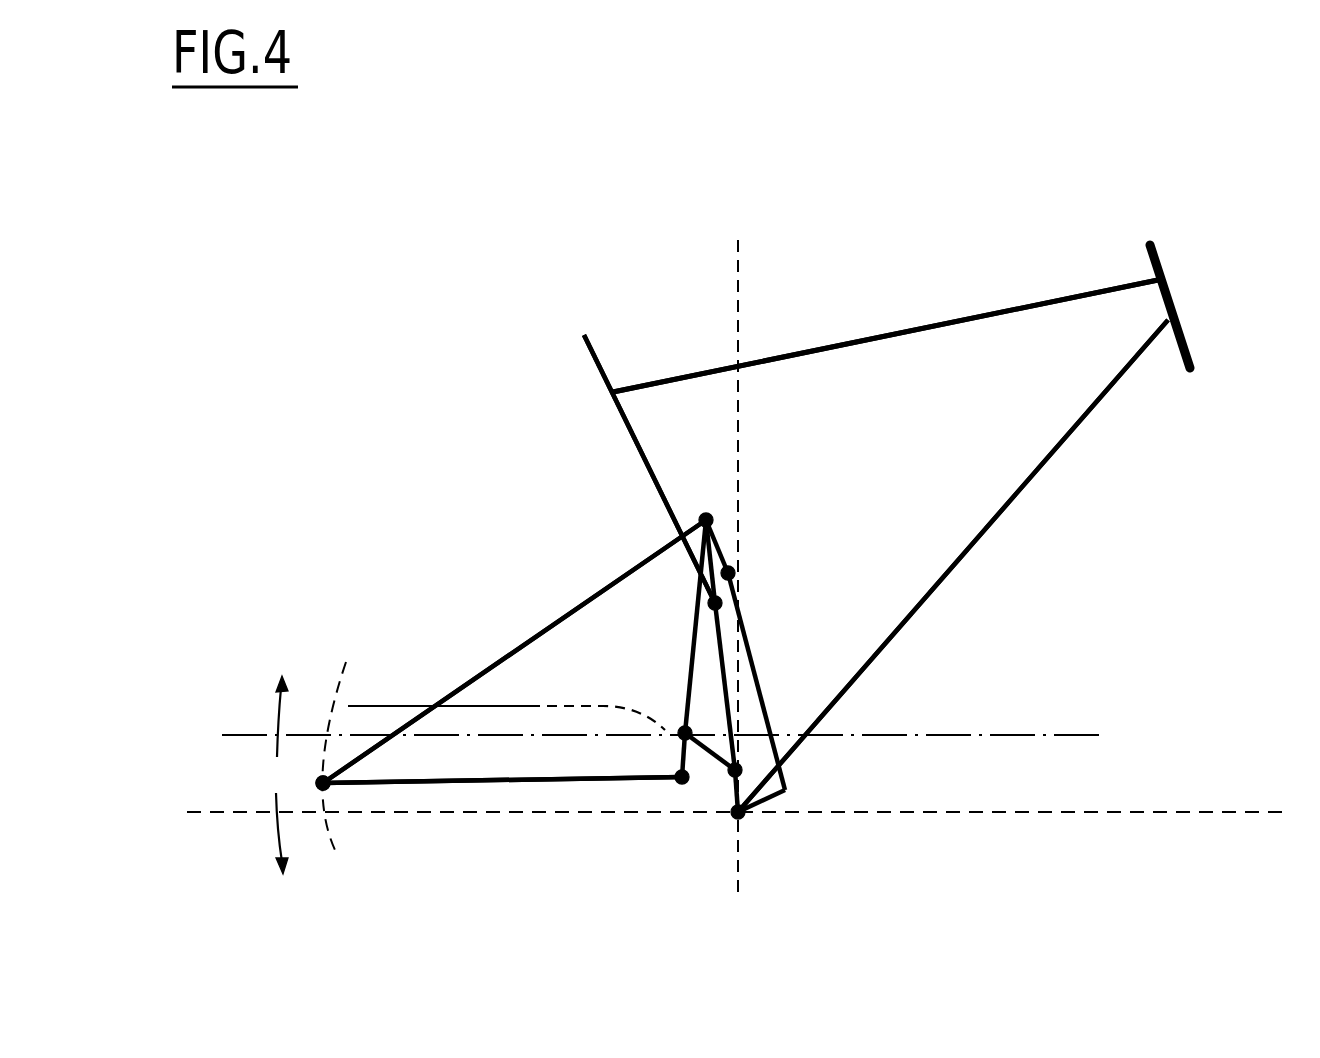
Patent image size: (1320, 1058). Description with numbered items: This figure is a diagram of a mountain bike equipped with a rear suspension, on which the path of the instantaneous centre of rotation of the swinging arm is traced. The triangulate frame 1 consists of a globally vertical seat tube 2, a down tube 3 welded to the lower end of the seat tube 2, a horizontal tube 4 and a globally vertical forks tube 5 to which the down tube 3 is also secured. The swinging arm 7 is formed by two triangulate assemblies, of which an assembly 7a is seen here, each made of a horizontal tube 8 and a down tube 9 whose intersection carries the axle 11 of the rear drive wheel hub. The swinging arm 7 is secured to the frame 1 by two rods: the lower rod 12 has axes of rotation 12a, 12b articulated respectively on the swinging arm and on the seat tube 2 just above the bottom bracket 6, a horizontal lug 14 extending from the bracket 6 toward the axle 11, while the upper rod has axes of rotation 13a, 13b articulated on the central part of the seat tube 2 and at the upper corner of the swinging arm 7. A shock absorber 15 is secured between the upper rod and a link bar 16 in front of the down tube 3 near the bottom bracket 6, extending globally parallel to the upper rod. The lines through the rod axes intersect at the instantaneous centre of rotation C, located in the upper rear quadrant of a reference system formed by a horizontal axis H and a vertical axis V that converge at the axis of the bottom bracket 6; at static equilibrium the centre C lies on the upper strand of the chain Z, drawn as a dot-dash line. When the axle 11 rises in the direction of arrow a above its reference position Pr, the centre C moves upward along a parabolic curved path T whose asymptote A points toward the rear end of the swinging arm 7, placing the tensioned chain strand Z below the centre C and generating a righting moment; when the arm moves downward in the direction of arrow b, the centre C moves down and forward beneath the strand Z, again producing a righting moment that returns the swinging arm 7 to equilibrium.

The frame 1 is at (953, 310).
The seat tube 2 is at (590, 363).
The down tube 3 is at (1045, 460).
The horizontal tube 4 is at (868, 340).
The forks tube 5 is at (1172, 292).
The bottom bracket 6 is at (760, 797).
The swinging arm 7 is at (442, 688).
The triangular assembly 7a is at (512, 650).
The horizontal tube 8 is at (510, 780).
The down tube 9 is at (593, 597).
The axle 11 is at (330, 790).
The lower rod 12 is at (710, 760).
The axis of rotation 12a is at (690, 783).
The axis of rotation 12b is at (723, 773).
The axis of rotation 13a is at (702, 612).
The axis of rotation 13b is at (705, 510).
The horizontal lug 14 is at (745, 795).
The shock absorber 15 is at (748, 657).
The link bar 16 is at (787, 773).
The vertical axis V is at (737, 278).
The horizontal axis H is at (1220, 815).
The upper strand of the chain Z is at (1080, 737).
The asymptote A is at (365, 705).
The curved path T is at (550, 705).
The instantaneous centre of rotation C is at (668, 740).
The reference position Pr is at (316, 783).
The arrow a is at (266, 716).
The arrow b is at (267, 833).